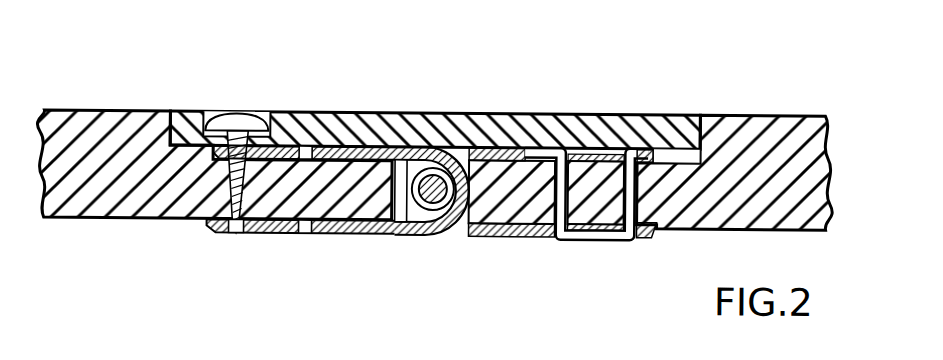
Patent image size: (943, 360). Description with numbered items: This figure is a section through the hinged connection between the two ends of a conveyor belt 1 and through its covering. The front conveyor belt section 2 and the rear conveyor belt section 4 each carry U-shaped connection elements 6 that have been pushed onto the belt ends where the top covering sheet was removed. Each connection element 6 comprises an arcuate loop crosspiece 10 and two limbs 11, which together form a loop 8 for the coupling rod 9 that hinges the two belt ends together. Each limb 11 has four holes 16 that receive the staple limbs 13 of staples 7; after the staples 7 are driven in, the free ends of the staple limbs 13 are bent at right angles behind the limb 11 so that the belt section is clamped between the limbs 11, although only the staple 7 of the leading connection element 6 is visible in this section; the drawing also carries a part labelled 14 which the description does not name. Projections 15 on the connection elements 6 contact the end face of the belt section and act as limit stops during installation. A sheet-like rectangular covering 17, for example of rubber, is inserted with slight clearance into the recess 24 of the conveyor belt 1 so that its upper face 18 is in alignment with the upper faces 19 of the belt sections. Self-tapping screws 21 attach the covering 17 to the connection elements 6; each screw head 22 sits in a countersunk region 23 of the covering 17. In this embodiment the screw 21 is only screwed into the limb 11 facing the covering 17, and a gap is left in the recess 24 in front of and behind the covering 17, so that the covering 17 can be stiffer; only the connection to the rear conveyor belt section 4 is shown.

The conveyor belt 1 is at (717, 58).
The front conveyor belt section 2 is at (757, 96).
The rear conveyor belt section 4 is at (151, 239).
The connection element 6 is at (348, 256).
The staple 7 is at (584, 264).
The loop 8 is at (436, 248).
The coupling rod 9 is at (443, 202).
The loop crosspiece 10 is at (460, 150).
The limb 11 is at (380, 146).
The staple limb 13 is at (535, 236).
The U-shaped channel 14 is at (605, 240).
The projection 15 is at (403, 222).
The hole 16 is at (308, 146).
The covering 17 is at (646, 94).
The upper face of the covering 18 is at (355, 112).
The upper face of the conveyor belt section 19 is at (80, 111).
The screw 21 is at (265, 80).
The screw head 22 is at (238, 113).
The countersunk region 23 is at (213, 112).
The recess 24 is at (683, 148).